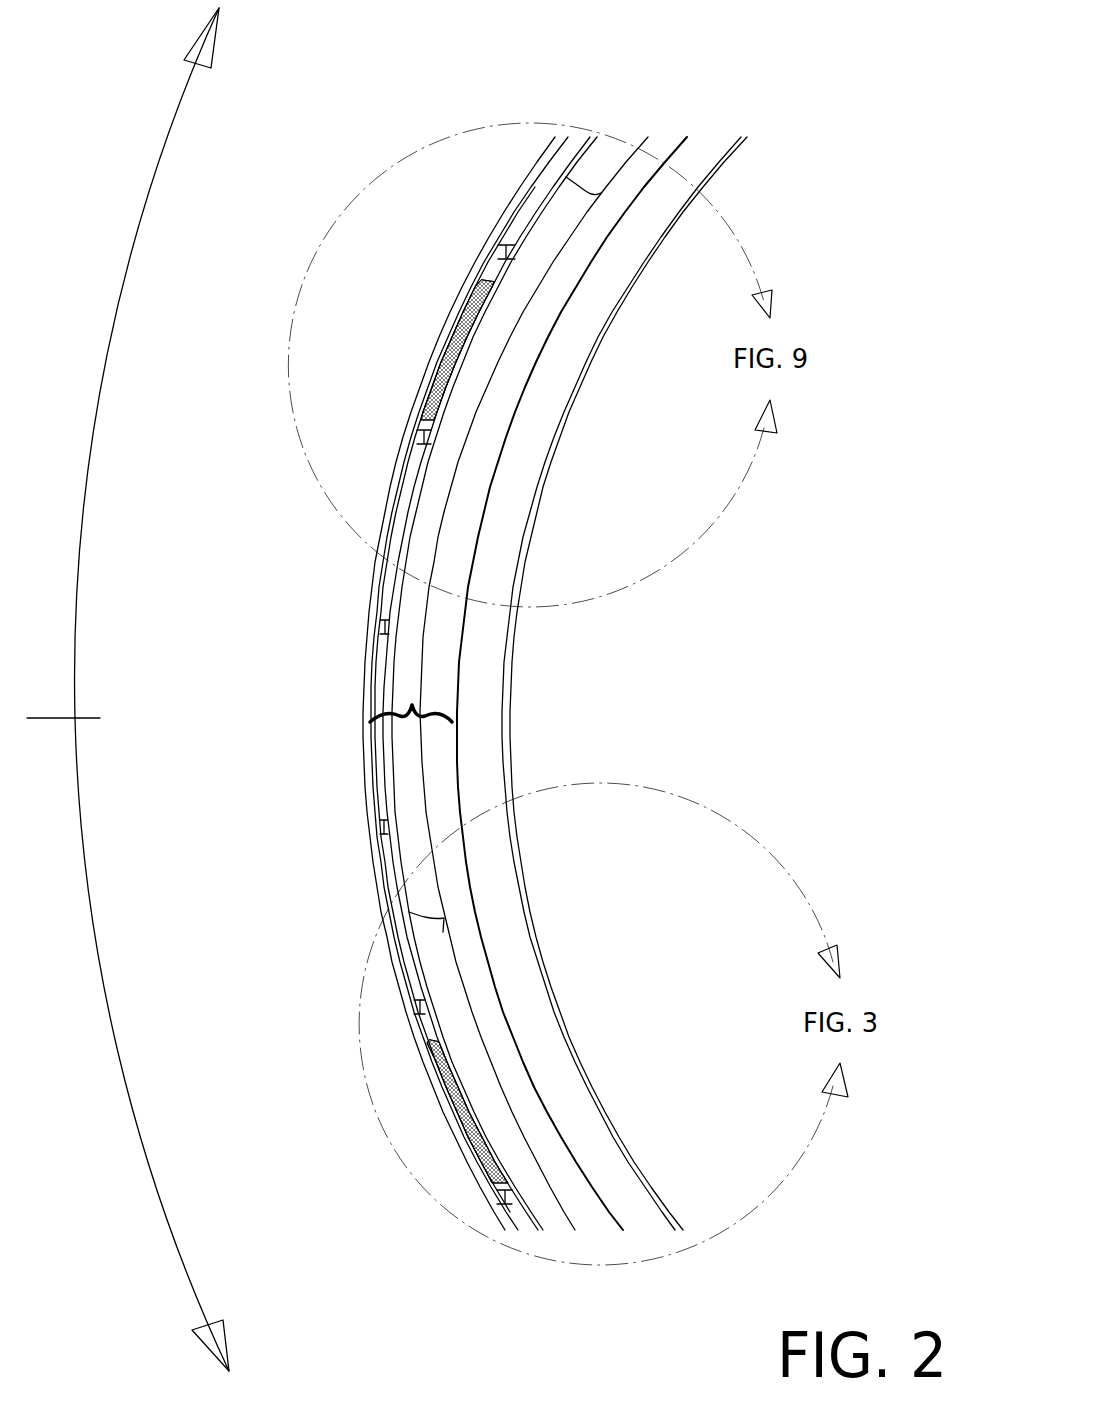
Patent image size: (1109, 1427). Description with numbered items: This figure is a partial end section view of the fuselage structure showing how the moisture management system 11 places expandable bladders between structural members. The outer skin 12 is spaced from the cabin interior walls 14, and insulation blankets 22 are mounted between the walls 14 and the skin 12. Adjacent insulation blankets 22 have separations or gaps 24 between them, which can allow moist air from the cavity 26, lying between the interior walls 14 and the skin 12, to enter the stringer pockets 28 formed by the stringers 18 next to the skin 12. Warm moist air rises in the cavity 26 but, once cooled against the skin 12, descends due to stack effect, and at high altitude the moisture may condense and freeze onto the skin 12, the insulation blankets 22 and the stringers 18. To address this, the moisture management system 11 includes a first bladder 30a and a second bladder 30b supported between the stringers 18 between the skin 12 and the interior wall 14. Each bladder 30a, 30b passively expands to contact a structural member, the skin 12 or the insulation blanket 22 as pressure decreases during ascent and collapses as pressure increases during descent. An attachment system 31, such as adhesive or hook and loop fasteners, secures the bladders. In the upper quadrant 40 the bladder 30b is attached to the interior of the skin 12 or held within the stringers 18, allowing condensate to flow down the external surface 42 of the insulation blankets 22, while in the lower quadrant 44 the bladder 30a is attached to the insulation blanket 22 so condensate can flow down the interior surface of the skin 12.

The moisture management system 11 is at (333, 753).
The skin 12 is at (368, 582).
The walls 14 is at (553, 376).
The stringers 18 is at (420, 432).
The insulation blanket 22 is at (412, 637).
The separations or gaps 24 is at (590, 197).
The cavity 26 is at (412, 706).
The stringer pockets 28 is at (383, 683).
The bladder 30a is at (468, 1113).
The bladder 30b is at (442, 362).
The attachment system 31 is at (472, 296).
The upper quadrant 40 is at (97, 395).
The external surface 42 is at (420, 496).
The lower quadrant 44 is at (108, 1014).